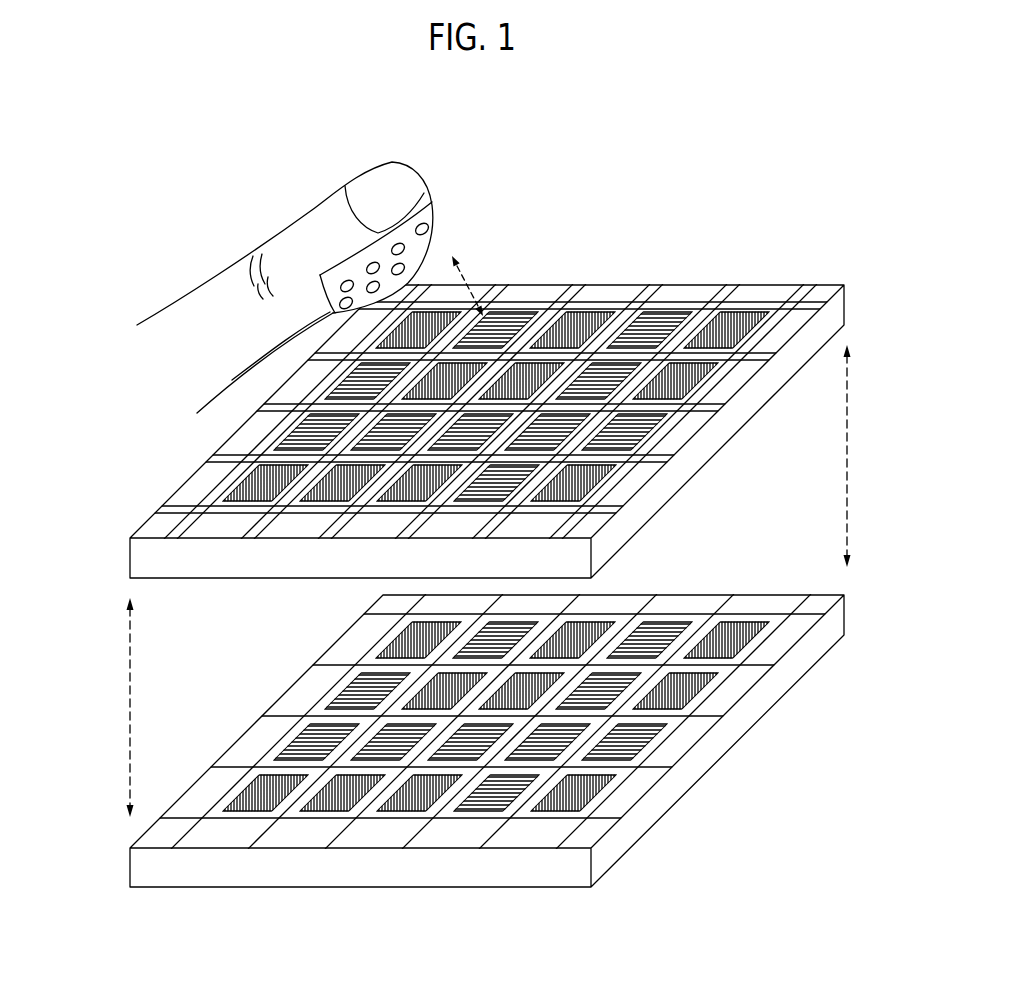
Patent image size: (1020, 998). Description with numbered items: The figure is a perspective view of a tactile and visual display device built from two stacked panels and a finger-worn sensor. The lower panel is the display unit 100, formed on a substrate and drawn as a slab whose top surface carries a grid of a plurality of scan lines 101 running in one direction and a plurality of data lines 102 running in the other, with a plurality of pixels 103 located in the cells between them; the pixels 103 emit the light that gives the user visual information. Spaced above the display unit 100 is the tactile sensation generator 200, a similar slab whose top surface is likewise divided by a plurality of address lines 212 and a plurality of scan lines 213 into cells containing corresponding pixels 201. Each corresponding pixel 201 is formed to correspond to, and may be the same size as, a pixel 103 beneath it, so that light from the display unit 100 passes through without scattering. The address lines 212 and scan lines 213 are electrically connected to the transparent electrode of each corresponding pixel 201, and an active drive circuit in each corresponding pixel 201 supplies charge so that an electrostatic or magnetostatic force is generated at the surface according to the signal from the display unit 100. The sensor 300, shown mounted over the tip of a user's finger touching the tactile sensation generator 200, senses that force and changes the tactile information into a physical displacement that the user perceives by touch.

The sensor 300 is at (449, 209).
The corresponding pixel 201 is at (570, 320).
The address line 212 is at (653, 285).
The scan line 213 is at (164, 504).
The tactile sensation generator 200 is at (646, 518).
The display unit 100 is at (646, 828).
The scan line 101 is at (263, 717).
The data line 102 is at (403, 848).
The pixel 103 is at (560, 800).